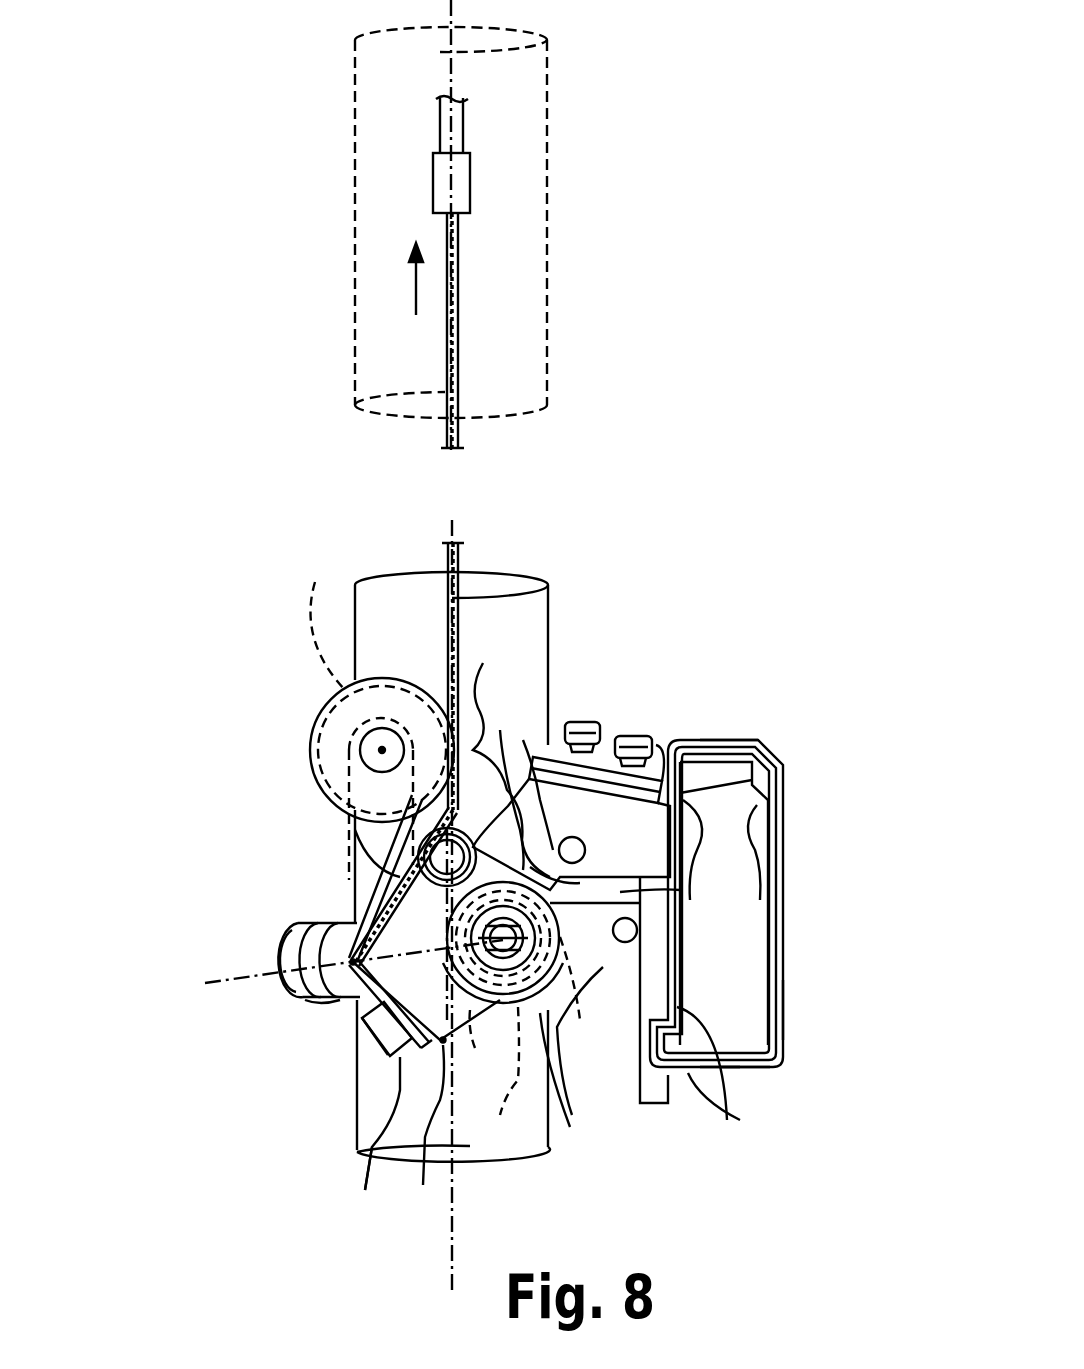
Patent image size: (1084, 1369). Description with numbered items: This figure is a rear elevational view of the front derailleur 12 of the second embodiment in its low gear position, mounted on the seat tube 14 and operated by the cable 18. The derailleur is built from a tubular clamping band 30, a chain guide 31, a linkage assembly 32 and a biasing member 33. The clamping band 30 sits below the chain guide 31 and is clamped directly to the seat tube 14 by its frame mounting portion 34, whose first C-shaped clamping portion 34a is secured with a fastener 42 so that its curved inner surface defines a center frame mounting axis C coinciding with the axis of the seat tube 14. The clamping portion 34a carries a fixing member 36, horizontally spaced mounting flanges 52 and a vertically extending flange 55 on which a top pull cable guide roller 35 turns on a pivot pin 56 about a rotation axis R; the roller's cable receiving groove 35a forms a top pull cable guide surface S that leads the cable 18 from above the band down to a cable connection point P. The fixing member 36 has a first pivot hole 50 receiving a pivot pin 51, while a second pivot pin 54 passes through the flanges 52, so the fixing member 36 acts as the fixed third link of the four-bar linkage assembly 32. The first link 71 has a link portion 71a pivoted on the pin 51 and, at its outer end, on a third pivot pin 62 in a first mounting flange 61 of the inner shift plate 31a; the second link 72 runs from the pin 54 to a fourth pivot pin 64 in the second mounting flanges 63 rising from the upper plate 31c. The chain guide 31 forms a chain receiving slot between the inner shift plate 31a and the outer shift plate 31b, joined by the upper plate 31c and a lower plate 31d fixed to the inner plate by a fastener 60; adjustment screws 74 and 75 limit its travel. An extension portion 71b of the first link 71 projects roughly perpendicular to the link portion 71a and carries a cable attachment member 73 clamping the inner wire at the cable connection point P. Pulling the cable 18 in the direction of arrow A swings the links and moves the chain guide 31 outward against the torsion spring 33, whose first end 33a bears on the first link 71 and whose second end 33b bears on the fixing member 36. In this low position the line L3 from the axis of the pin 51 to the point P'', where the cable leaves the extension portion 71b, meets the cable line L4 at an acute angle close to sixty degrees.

The seat tube 14 is at (547, 198).
The cable 18 is at (470, 552).
The front derailleur 12 is at (692, 665).
The clamping band 30 is at (330, 1013).
The chain guide 31 is at (783, 875).
The inner shift plate 31a is at (757, 1070).
The outer shift plate 31b is at (783, 1013).
The upper plate 31c is at (743, 740).
The lower plate 31d is at (758, 1073).
The linkage assembly 32 is at (660, 755).
The biasing member 33 is at (502, 1078).
The first end of biasing member 33a is at (484, 959).
The second end of biasing member 33b is at (584, 1088).
The frame mounting portion 34 is at (347, 913).
The first C-shaped clamping portion 34a is at (297, 1008).
The top pull cable guide roller 35 is at (318, 705).
The cable receiving groove 35a is at (311, 622).
The fixing member 36 is at (642, 990).
The fastener 42 is at (282, 953).
The first pivot hole 50 is at (622, 990).
The pivot pin 51 is at (575, 1022).
The mounting flange 52 is at (560, 960).
The second pivot pin 54 is at (560, 938).
The vertically extending flange 55 is at (357, 832).
The pivot pin 56 is at (378, 735).
The fastener 60 is at (697, 1070).
The first mounting flange 61 is at (521, 740).
The third pivot pin 62 is at (450, 828).
The second mounting flanges 63 is at (658, 828).
The fourth pivot pin 64 is at (585, 850).
The first link 71 is at (517, 984).
The link portion 71a is at (530, 828).
The extension portion 71b is at (360, 1050).
The second link 72 is at (627, 892).
The cable attachment member 73 is at (365, 1185).
The adjustment screw 74 is at (578, 722).
The adjustment screw 75 is at (631, 736).
The cable pulling direction arrow A is at (414, 292).
The center frame mounting axis C is at (452, 1258).
The line L3 is at (243, 983).
The line L4 is at (400, 877).
The cable connection point P is at (353, 1080).
The cable departure point P'' is at (271, 934).
The rotation axis R is at (382, 750).
The top pull cable guide surface S is at (511, 749).